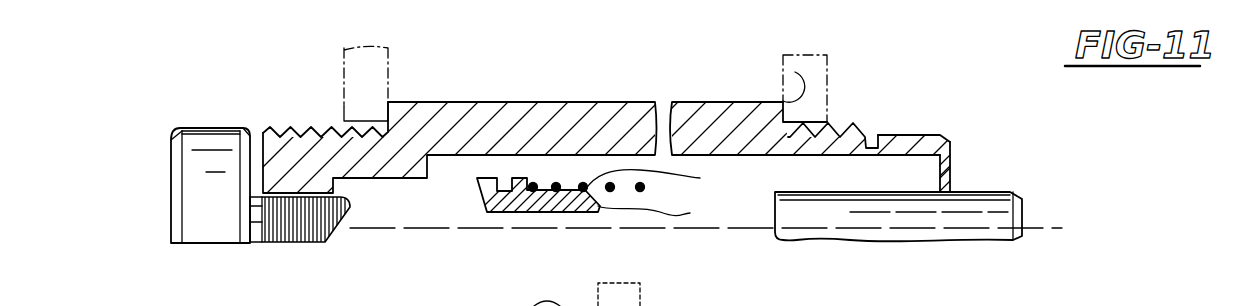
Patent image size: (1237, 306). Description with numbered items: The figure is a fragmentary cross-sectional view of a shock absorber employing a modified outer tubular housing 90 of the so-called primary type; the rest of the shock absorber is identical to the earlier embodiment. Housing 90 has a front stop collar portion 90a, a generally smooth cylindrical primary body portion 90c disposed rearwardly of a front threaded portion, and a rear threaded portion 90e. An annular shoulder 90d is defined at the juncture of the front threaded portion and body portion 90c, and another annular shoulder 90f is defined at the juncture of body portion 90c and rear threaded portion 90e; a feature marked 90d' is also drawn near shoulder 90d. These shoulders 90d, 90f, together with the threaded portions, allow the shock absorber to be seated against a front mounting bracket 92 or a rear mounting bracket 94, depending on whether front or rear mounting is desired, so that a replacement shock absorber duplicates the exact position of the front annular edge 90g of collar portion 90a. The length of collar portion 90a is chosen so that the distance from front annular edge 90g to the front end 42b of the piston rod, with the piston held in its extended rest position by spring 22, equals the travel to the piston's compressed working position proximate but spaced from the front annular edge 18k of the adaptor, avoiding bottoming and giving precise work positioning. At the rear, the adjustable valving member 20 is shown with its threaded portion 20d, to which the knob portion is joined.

The adjustable valving member 20 is at (193, 120).
The threaded portion 20d is at (290, 225).
The outer tubular housing 90 is at (553, 102).
The rear threaded portion 90e is at (310, 130).
The annular shoulder 90f is at (388, 100).
The mounting bracket 94 is at (338, 65).
The primary body portion 90c is at (690, 102).
The mounting bracket 92 is at (828, 102).
The annular shoulder 90d is at (860, 110).
The recess 90d' is at (772, 79).
The front stop collar portion 90a is at (915, 135).
The front annular edge 90g is at (950, 147).
The front annular edge 18k is at (640, 213).
The spring 22 is at (745, 186).
The front end 42b is at (1022, 205).